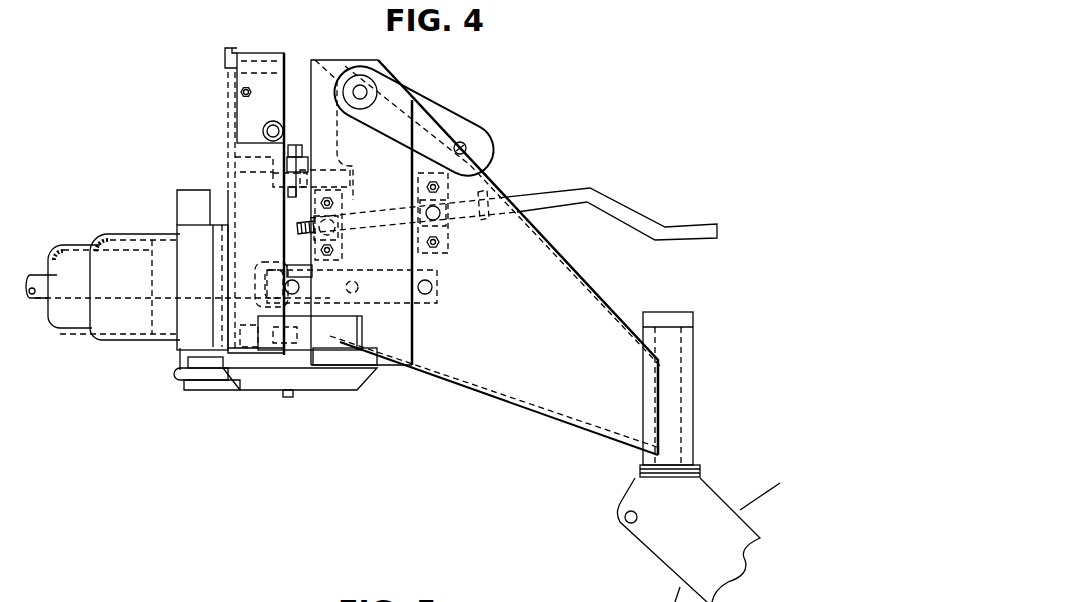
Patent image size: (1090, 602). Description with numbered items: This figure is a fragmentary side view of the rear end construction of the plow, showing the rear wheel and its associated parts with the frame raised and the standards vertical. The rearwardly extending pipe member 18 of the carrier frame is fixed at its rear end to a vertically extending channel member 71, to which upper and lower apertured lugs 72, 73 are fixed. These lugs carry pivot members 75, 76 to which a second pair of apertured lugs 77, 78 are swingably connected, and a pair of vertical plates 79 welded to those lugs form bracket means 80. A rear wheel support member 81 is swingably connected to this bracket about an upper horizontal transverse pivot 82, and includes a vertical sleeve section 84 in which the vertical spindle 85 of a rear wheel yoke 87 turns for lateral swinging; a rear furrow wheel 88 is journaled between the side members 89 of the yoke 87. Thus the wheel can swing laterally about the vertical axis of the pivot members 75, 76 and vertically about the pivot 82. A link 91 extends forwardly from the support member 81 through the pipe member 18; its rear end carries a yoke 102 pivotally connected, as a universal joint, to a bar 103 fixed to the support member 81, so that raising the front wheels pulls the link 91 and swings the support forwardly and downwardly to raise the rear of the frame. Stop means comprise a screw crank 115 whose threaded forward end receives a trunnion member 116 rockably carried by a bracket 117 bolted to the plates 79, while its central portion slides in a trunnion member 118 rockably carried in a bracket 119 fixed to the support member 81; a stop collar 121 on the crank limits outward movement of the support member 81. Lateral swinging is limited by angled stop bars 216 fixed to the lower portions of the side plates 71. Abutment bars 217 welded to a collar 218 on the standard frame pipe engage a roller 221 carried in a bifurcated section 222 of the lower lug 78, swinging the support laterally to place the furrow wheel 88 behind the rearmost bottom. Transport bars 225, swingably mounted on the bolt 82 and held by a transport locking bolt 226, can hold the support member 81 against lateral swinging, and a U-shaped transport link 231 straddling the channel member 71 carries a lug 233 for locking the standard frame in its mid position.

The rearwardly extending pipe member 18 is at (76, 247).
The vertically extending channel member 71 is at (243, 193).
The upper apertured lug 72 is at (247, 152).
The lower apertured lug 73 is at (253, 340).
The upper pivot member 75 is at (284, 142).
The lower pivot member 76 is at (286, 396).
The upper apertured lug 77 is at (305, 176).
The lower apertured lug 78 is at (314, 399).
The vertical plates 79 is at (393, 163).
The bracket means 80 is at (334, 56).
The rear wheel support member 81 is at (520, 415).
The upper horizontal transverse pivot 82 is at (371, 99).
The vertical sleeve section 84 is at (688, 398).
The vertical spindle 85 is at (683, 364).
The rear wheel yoke 87 is at (629, 551).
The rear furrow wheel 88 is at (660, 601).
The side members of the yoke 89 is at (718, 500).
The link 91 is at (45, 294).
The yoke 102 is at (265, 262).
The bar 103 is at (377, 304).
The screw crank 115 is at (530, 194).
The trunnion member 116 is at (342, 205).
The bracket 117 is at (345, 252).
The trunnion member 118 is at (418, 240).
The bracket 119 is at (448, 248).
The stop collar 121 is at (487, 222).
The angled stop bars 216 is at (338, 347).
The abutment bars 217 is at (182, 200).
The collar 218 is at (178, 318).
The roller 221 is at (178, 380).
The bifurcated section 222 is at (193, 391).
The transport bars 225 is at (437, 112).
The transport locking bolt 226 is at (240, 92).
The transport link 231 is at (262, 53).
The lug 233 is at (225, 52).